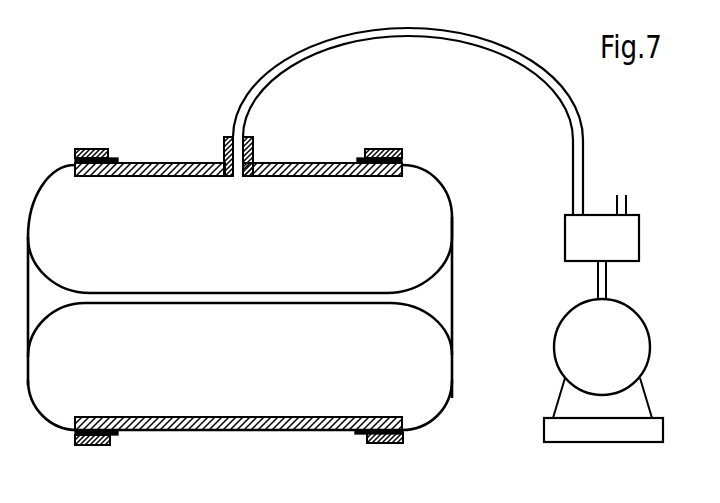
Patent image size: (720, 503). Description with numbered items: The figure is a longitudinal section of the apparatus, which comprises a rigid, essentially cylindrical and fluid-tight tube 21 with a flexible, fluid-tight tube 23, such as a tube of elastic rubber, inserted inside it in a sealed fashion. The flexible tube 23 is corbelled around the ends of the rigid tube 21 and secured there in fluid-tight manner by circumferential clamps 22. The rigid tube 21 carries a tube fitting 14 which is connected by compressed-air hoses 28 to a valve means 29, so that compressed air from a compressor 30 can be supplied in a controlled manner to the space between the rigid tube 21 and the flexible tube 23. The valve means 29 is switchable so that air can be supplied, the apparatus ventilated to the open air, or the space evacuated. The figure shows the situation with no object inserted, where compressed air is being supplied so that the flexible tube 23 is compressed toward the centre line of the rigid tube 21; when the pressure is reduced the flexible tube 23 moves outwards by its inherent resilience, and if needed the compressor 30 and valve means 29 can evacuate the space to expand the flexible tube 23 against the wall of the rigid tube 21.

The tube fitting 14 is at (227, 136).
The rigid tube 21 is at (145, 163).
The circumferential clamps 22 is at (99, 150).
The flexible tube 23 is at (240, 297).
The compressed-air hoses 28 is at (350, 43).
The valve means 29 is at (571, 226).
The compressor 30 is at (567, 313).